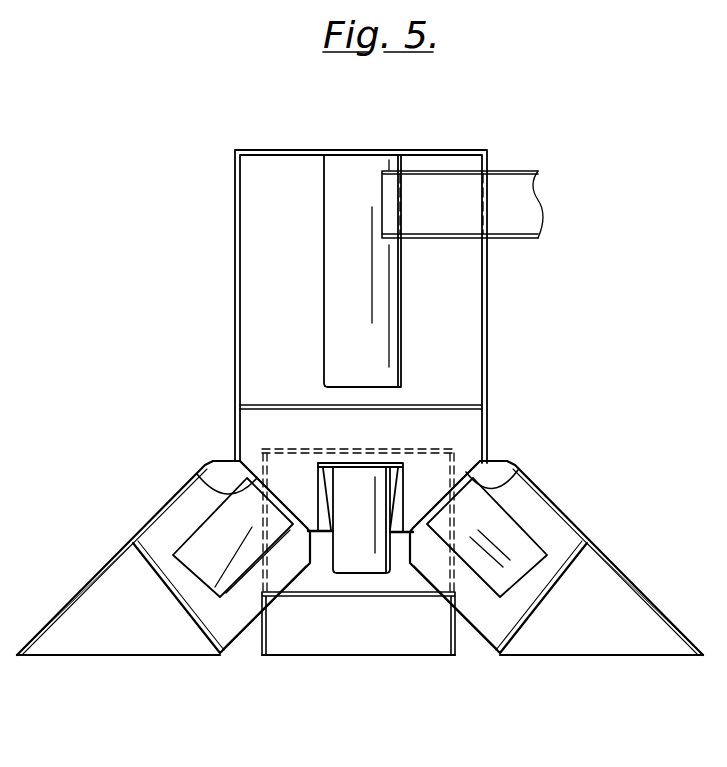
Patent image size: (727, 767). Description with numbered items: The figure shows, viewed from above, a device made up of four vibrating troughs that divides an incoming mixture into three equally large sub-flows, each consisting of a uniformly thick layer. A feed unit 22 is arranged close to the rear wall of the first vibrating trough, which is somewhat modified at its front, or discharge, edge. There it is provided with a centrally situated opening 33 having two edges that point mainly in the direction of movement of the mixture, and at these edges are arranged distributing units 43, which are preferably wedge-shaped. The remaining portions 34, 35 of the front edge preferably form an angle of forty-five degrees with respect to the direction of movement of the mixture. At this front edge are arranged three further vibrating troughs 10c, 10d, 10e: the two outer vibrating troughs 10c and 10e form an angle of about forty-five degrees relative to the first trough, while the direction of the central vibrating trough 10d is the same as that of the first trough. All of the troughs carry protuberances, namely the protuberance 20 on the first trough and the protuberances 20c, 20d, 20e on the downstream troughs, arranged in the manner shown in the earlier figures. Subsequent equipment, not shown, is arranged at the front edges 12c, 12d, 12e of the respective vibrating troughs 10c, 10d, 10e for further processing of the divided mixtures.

The protuberance 20 is at (390, 297).
The feed unit 22 is at (510, 187).
The vibrating trough 10c is at (163, 527).
The vibrating trough 10d is at (427, 630).
The vibrating trough 10e is at (533, 505).
The front edge 12c is at (162, 657).
The front edge 12d is at (322, 657).
The front edge 12e is at (605, 658).
The protuberance 20c is at (215, 587).
The protuberance 20d is at (370, 562).
The protuberance 20e is at (530, 553).
The opening 33 is at (395, 473).
The remaining portion of the front edge 34 is at (200, 475).
The remaining portion of the front edge 35 is at (513, 473).
The distributing unit 43 is at (397, 513).